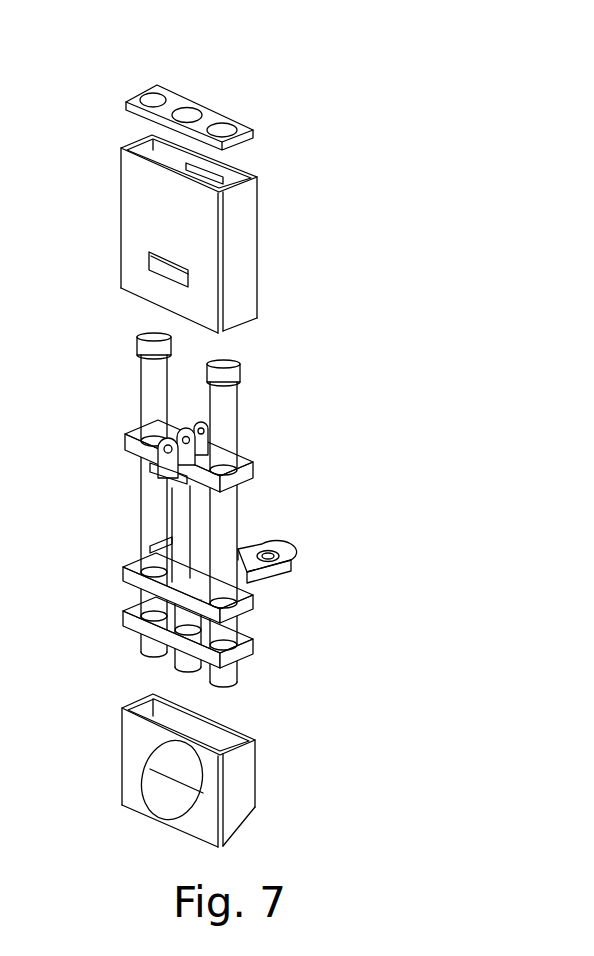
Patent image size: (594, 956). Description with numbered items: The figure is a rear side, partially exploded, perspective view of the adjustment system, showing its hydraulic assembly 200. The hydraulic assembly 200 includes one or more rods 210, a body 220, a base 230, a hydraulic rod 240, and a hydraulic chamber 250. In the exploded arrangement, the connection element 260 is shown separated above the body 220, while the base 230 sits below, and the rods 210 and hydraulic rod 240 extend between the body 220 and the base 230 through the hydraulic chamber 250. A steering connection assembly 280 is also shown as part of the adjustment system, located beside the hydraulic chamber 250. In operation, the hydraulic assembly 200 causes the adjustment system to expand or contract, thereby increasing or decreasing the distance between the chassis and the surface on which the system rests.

The hydraulic assembly 200 is at (470, 128).
The rods 210 is at (218, 402).
The body 220 is at (237, 258).
The base 230 is at (240, 783).
The hydraulic rod 240 is at (187, 668).
The hydraulic chamber 250 is at (163, 524).
The connection element 260 is at (243, 141).
The steering connection assembly 280 is at (293, 572).